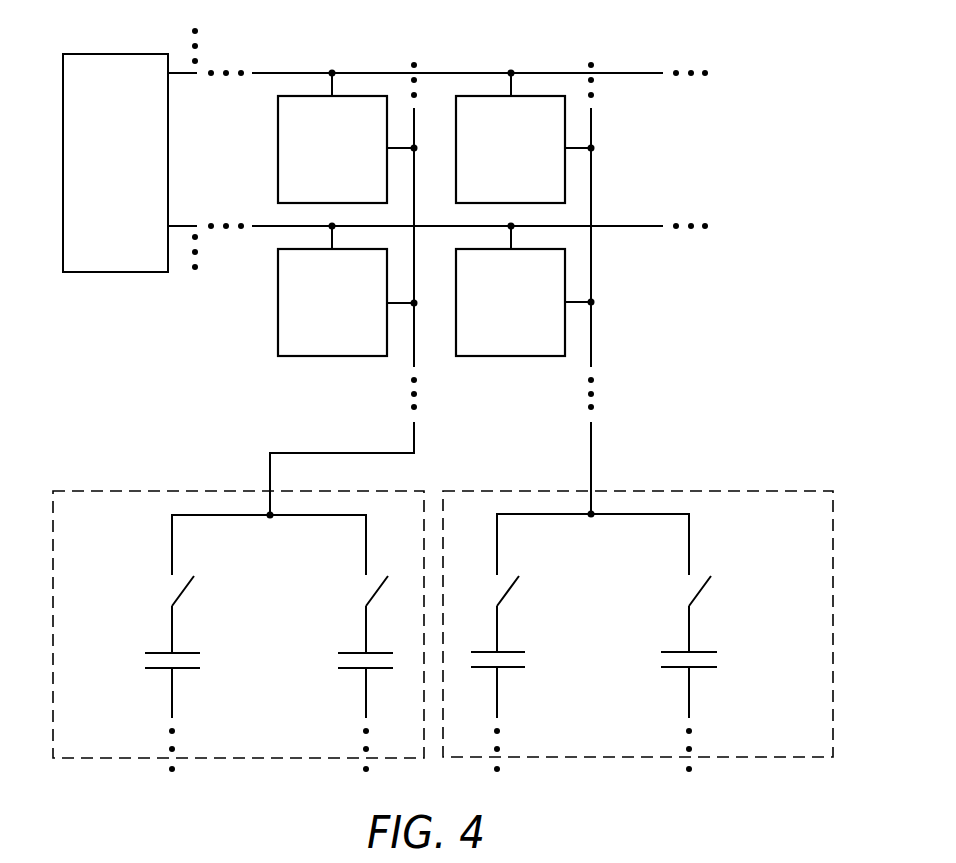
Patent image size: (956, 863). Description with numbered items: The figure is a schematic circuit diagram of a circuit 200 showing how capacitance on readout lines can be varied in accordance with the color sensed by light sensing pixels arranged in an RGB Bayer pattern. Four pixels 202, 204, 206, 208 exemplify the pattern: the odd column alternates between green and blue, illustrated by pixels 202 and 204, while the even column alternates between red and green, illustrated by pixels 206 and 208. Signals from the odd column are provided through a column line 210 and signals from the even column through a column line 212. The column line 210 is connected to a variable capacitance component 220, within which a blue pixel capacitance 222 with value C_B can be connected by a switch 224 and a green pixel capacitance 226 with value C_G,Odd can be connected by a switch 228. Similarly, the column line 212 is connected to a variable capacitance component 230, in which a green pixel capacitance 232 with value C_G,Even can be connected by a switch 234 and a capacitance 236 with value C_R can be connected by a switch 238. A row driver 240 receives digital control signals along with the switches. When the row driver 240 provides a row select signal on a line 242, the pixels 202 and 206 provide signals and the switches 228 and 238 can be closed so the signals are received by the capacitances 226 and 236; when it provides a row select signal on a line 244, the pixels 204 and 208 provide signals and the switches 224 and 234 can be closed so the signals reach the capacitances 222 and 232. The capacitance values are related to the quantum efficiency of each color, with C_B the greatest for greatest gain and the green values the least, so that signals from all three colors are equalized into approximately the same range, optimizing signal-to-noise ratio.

The circuit 200 is at (768, 167).
The pixel 202 is at (278, 122).
The pixel 204 is at (278, 275).
The pixel 206 is at (565, 182).
The pixel 208 is at (510, 356).
The column line 210 is at (414, 441).
The column line 212 is at (591, 441).
The variable capacitance component 220 is at (160, 491).
The blue pixel capacitance 222 is at (157, 672).
The switch 224 is at (168, 590).
The green pixel capacitance 226 is at (350, 672).
The switch 228 is at (362, 590).
The variable capacitance component 230 is at (808, 491).
The green pixel capacitance 232 is at (527, 660).
The switch 234 is at (507, 575).
The pixel capacitance 236 is at (672, 672).
The switch 238 is at (697, 575).
The row driver 240 is at (117, 54).
The line 242 is at (289, 73).
The line 244 is at (628, 227).